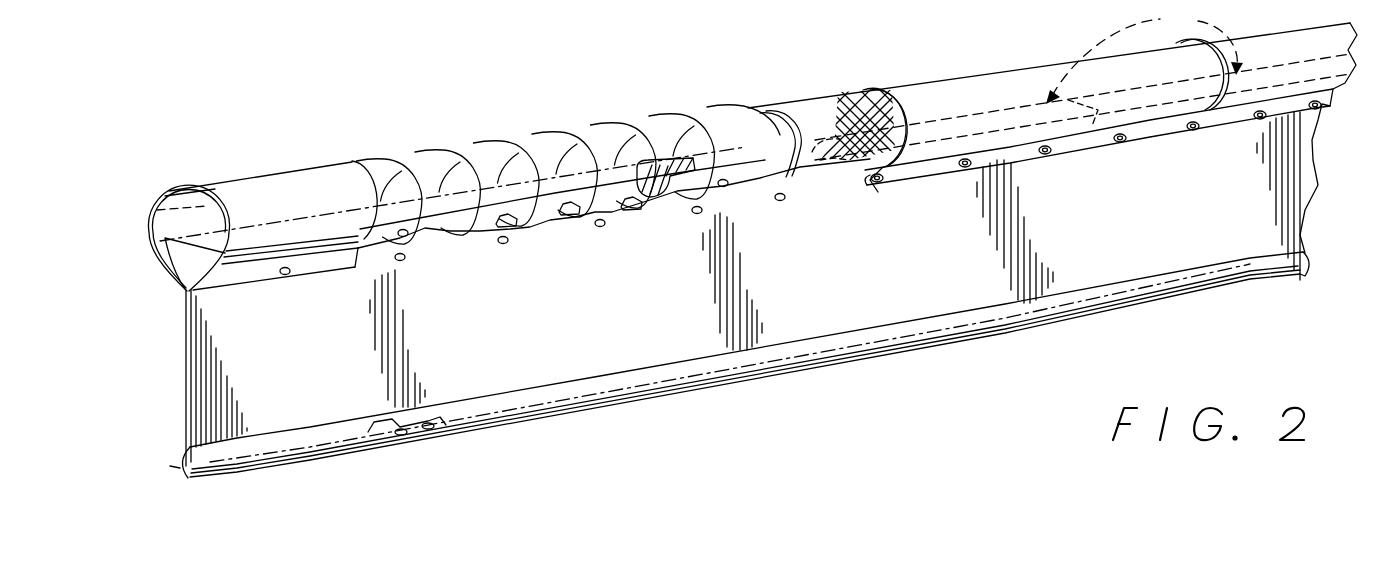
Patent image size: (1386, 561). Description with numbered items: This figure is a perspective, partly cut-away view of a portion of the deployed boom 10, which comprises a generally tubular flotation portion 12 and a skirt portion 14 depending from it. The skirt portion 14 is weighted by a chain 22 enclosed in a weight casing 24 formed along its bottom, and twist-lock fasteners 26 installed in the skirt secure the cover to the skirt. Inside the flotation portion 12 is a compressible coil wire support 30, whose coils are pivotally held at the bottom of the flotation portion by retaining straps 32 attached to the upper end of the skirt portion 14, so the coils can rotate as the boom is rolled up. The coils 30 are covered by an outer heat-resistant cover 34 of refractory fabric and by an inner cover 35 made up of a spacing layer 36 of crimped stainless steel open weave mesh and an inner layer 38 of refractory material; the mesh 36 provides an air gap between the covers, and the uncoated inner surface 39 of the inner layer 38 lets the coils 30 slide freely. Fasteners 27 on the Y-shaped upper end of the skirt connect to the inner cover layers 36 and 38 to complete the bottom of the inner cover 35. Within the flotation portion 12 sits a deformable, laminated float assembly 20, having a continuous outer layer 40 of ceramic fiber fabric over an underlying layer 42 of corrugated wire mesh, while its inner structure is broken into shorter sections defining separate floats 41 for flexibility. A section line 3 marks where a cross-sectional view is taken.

The boom 10 is at (322, 140).
The flotation portion 12 is at (1003, 78).
The skirt portion 14 is at (1183, 222).
The float assembly 20 is at (430, 210).
The chain 22 is at (422, 434).
The weight casing 24 is at (535, 408).
The twist-lock fasteners 26 is at (288, 275).
The fasteners 27 is at (412, 236).
The compressible coil wire support 30 is at (652, 122).
The retaining straps 32 is at (632, 210).
The outer heat-resistant cover 34 is at (933, 93).
The inner cover 35 is at (845, 90).
The spacing layer 36 is at (848, 162).
The inner layer 38 is at (820, 155).
The inner surface 39 is at (190, 217).
The outer layer 40 is at (733, 158).
The separate floats 41 is at (1144, 67).
The underlying layer 42 is at (656, 152).
The section line 3- 3 is at (918, 32).